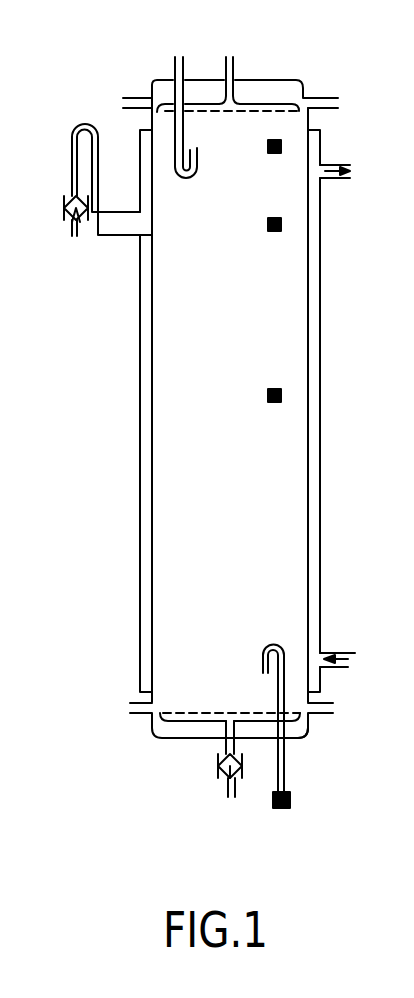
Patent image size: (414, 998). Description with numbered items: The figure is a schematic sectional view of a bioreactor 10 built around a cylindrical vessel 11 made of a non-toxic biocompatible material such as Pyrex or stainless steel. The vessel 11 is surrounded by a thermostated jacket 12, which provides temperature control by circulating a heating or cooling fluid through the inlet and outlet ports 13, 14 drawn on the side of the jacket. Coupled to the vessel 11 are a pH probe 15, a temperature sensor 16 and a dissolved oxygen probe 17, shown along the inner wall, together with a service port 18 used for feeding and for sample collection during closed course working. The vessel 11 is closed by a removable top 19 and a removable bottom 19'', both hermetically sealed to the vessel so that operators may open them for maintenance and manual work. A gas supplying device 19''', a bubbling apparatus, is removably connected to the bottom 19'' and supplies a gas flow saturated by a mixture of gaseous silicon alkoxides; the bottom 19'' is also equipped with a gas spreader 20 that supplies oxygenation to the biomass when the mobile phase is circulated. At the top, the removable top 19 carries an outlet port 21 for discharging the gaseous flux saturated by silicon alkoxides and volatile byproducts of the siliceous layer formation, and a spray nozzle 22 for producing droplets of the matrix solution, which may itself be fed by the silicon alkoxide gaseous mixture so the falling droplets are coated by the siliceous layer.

The bioreactor 10 is at (90, 372).
The vessel 11 is at (168, 525).
The thermostated jacket 12 is at (140, 445).
The inlet port 13 is at (350, 659).
The outlet port 14 is at (350, 168).
The pH probe 15 is at (282, 396).
The temperature sensor 16 is at (282, 225).
The dissolved oxygen probe 17 is at (282, 147).
The service port 18 is at (72, 222).
The removable top 19 is at (336, 361).
The removable bottom 19'' is at (344, 744).
The gas supplying device 19''' is at (318, 740).
The gas spreader 20 is at (223, 788).
The outlet port 21 is at (178, 60).
The spray nozzle 22 is at (257, 103).